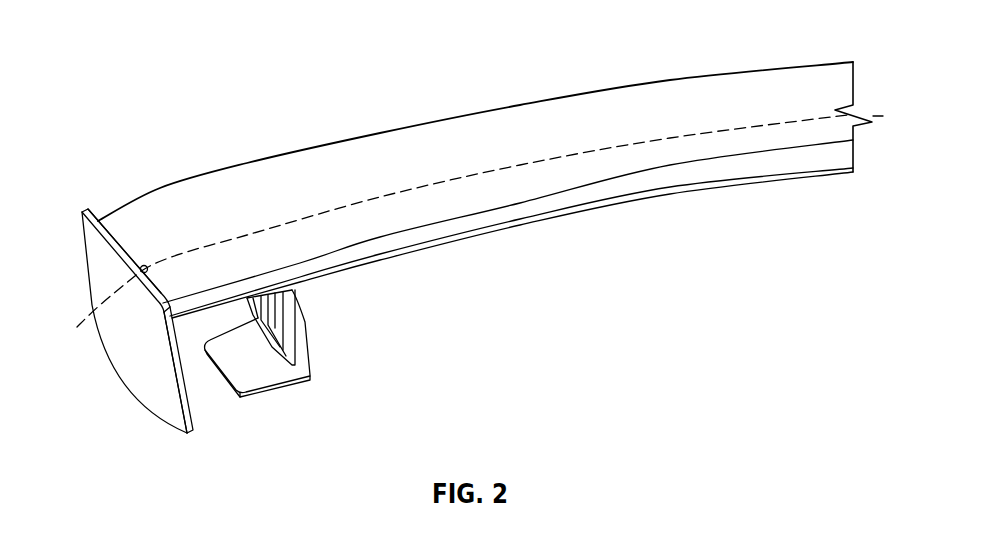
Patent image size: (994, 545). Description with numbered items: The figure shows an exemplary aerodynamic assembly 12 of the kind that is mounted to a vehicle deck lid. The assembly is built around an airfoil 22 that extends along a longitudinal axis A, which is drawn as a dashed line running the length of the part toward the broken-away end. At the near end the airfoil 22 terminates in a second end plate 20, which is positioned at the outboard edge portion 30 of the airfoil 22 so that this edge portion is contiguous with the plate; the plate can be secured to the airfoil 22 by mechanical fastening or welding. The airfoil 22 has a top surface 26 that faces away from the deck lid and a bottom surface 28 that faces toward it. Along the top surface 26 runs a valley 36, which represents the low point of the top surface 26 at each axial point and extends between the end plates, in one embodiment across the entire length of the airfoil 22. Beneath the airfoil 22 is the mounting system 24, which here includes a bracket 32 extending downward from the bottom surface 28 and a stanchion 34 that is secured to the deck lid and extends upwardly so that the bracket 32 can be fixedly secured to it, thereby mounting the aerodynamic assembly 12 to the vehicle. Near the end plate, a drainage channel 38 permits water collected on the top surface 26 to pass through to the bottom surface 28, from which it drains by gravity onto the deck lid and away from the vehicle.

The aerodynamic assembly 12 is at (491, 237).
The second end plate 20 is at (145, 367).
The airfoil 22 is at (423, 227).
The mounting system 24 is at (296, 360).
The top surface 26 is at (315, 177).
The bottom surface 28 is at (355, 267).
The outboard edge portion 30 is at (135, 284).
The bracket 32 is at (292, 292).
The stanchion 34 is at (257, 371).
The valley 36 is at (492, 173).
The drainage channel 38 is at (147, 266).
The longitudinal axis A is at (868, 118).